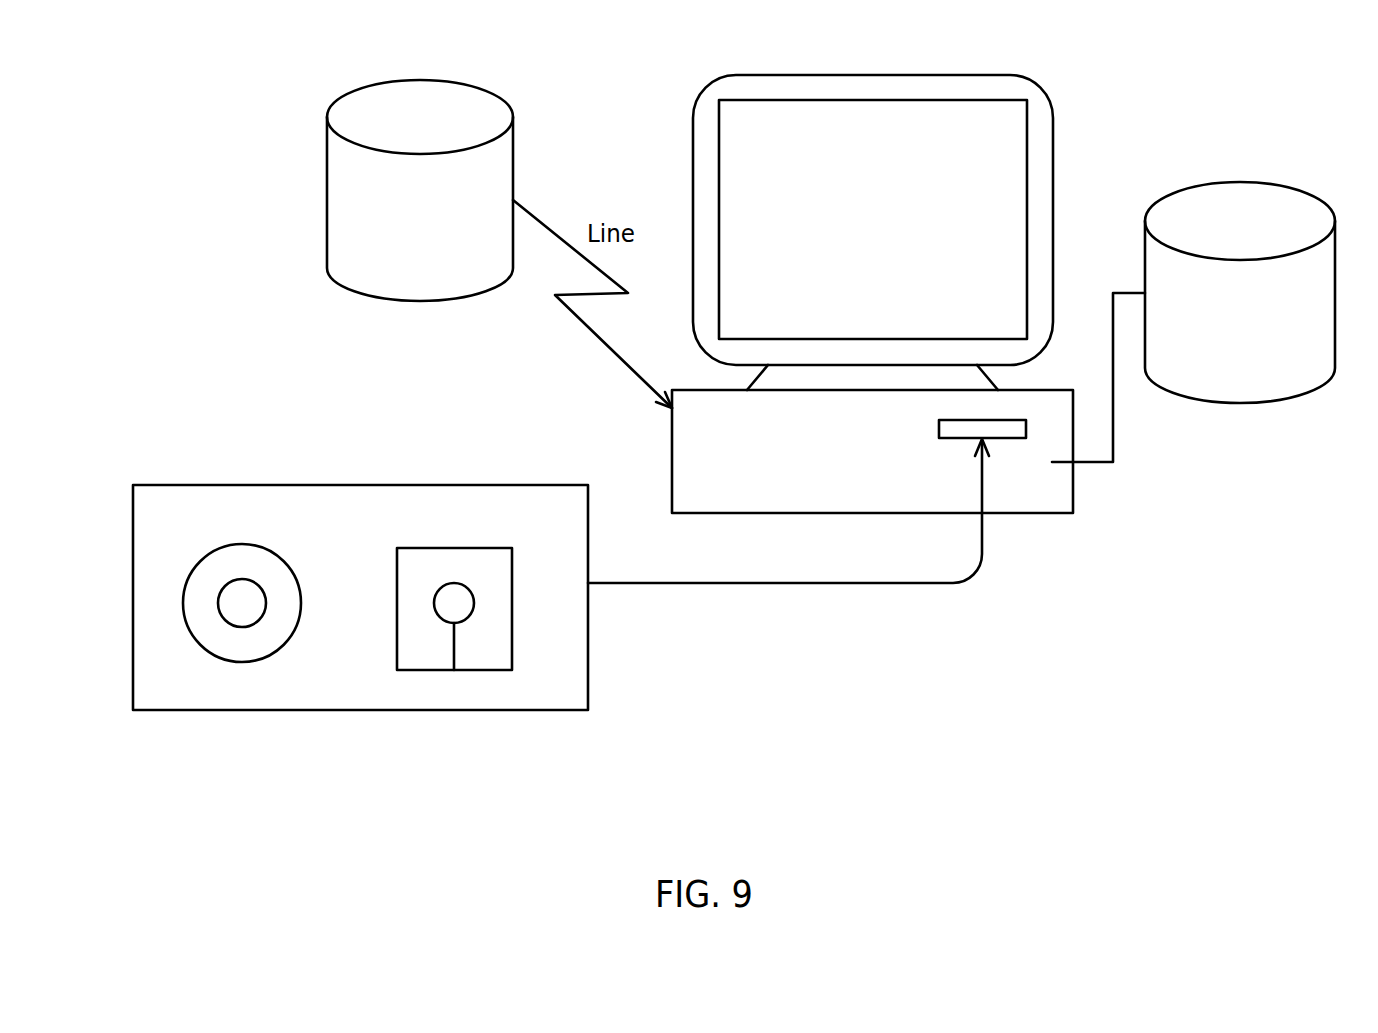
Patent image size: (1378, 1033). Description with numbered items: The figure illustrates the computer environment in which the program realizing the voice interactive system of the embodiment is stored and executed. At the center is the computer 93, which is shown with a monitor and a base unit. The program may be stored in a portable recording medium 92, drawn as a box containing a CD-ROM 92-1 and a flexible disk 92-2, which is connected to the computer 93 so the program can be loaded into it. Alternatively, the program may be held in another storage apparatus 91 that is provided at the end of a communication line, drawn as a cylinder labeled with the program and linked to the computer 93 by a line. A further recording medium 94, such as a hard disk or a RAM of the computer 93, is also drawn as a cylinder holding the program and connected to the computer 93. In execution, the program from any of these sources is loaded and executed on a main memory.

The storage apparatus 91 is at (480, 92).
The portable recording medium 92 is at (360, 561).
The CD-ROM 92-1 is at (259, 581).
The flexible disk 92-2 is at (456, 585).
The computer 93 is at (872, 75).
The recording medium 94 is at (1298, 193).